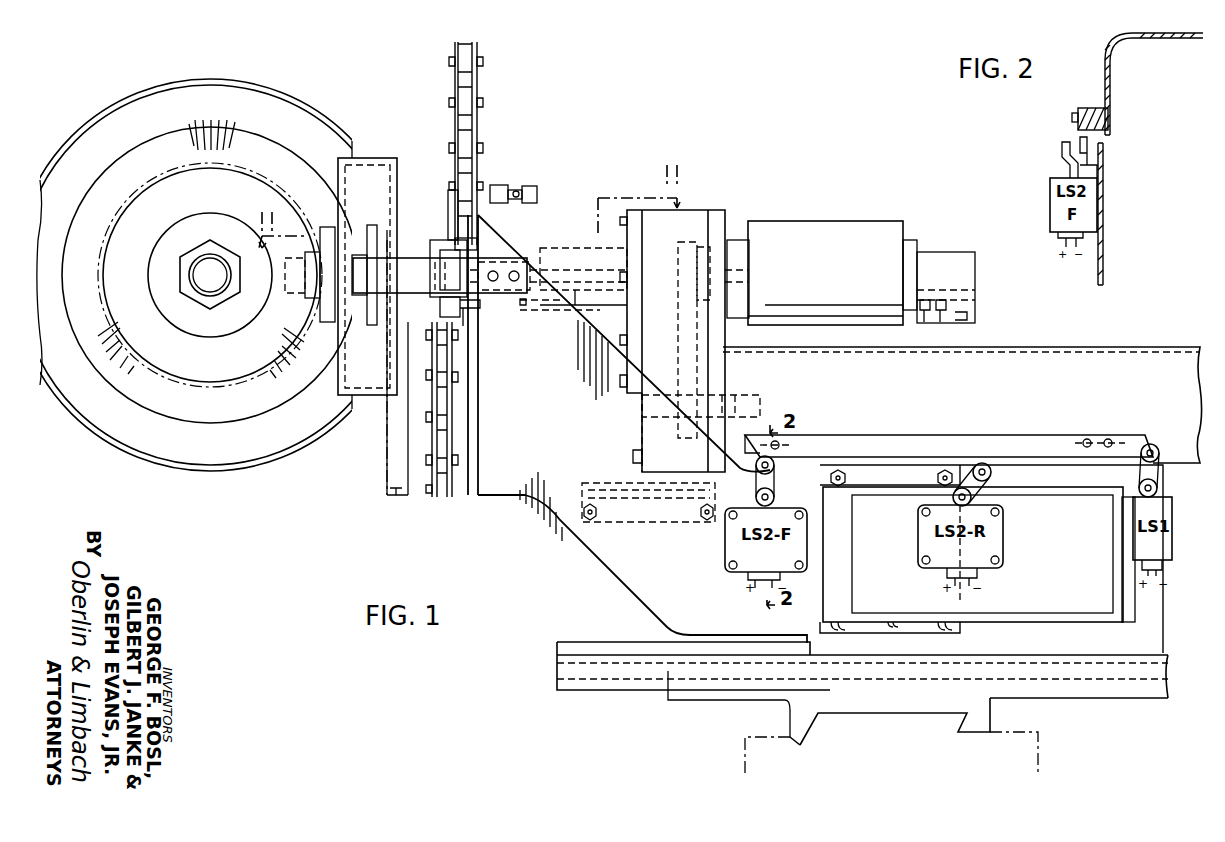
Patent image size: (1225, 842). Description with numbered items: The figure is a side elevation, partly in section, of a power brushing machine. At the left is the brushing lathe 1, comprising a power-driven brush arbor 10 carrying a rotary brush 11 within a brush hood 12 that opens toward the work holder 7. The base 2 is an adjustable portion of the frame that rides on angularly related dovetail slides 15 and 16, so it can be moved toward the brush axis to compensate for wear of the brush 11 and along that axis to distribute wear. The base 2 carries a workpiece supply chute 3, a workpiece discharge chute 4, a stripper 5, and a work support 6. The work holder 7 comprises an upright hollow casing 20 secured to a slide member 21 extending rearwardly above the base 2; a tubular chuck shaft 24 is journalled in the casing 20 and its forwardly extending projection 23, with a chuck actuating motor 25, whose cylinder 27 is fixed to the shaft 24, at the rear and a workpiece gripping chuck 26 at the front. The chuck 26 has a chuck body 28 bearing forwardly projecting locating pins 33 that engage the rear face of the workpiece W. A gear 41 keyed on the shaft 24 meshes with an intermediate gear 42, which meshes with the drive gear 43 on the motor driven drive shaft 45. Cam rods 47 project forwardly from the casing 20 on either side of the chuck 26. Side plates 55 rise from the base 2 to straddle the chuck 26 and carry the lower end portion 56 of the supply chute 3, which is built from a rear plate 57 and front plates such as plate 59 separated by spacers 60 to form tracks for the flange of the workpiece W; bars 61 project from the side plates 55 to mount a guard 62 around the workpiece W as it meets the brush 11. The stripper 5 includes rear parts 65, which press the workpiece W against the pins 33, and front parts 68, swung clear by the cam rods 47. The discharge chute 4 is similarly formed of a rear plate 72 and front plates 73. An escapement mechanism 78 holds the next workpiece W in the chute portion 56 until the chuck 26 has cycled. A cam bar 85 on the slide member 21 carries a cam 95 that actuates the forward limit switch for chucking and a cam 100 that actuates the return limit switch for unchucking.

In FIG. 1, the brushing lathe 1 is at (176, 476).
In FIG. 1, the base 2 is at (595, 567).
In FIG. 2, the base 2 is at (1093, 259).
In FIG. 1, the workpiece supply chute 3 is at (481, 76).
In FIG. 1, the workpiece discharge chute 4 is at (393, 503).
In FIG. 1, the stripper 5 is at (444, 238).
In FIG. 1, the work support 6 is at (476, 317).
In FIG. 1, the work holder 7 is at (718, 206).
In FIG. 1, the brush arbor 10 is at (200, 242).
In FIG. 1, the rotary brush 11 is at (262, 142).
In FIG. 1, the brush hood 12 is at (264, 88).
In FIG. 1, the dovetail slide 15 is at (748, 690).
In FIG. 1, the dovetail slide 16 is at (818, 724).
In FIG. 1, the hollow casing 20 is at (705, 228).
In FIG. 1, the slide member 21 is at (1035, 348).
In FIG. 2, the slide member 21 is at (1112, 70).
In FIG. 1, the forwardly extending projection 23 is at (583, 250).
In FIG. 1, the tubular chuck shaft 24 is at (770, 242).
In FIG. 1, the chuck actuating motor 25 is at (865, 218).
In FIG. 1, the workpiece gripping chuck 26 is at (351, 287).
In FIG. 1, the cylinder 27 is at (800, 222).
In FIG. 1, the chuck body 28 is at (520, 312).
In FIG. 1, the locating pins 33 is at (512, 256).
In FIG. 1, the gear 41 is at (680, 268).
In FIG. 1, the intermediate gear 42 is at (680, 326).
In FIG. 1, the drive gear 43 is at (680, 380).
In FIG. 1, the drive shaft 45 is at (640, 408).
In FIG. 1, the cam rods 47 is at (605, 318).
In FIG. 1, the side plates 55 is at (540, 492).
In FIG. 1, the lower end portion 56 is at (444, 202).
In FIG. 1, the rear plate 57 is at (478, 135).
In FIG. 1, the front plate 59 is at (455, 125).
In FIG. 1, the spacers 60 is at (470, 56).
In FIG. 1, the bars 61 is at (432, 262).
In FIG. 1, the guard 62 is at (368, 160).
In FIG. 1, the rear stripper parts 65 is at (470, 256).
In FIG. 1, the front stripper parts 68 is at (432, 302).
In FIG. 1, the rear plate 72 is at (450, 432).
In FIG. 1, the front plates 73 is at (430, 418).
In FIG. 1, the escapement mechanism 78 is at (530, 190).
In FIG. 1, the cam bar 85 is at (988, 436).
In FIG. 2, the cam bar 85 is at (1078, 107).
In FIG. 1, the cam 95 is at (775, 470).
In FIG. 1, the cam 100 is at (1081, 440).
In FIG. 1, the workpiece W is at (350, 237).